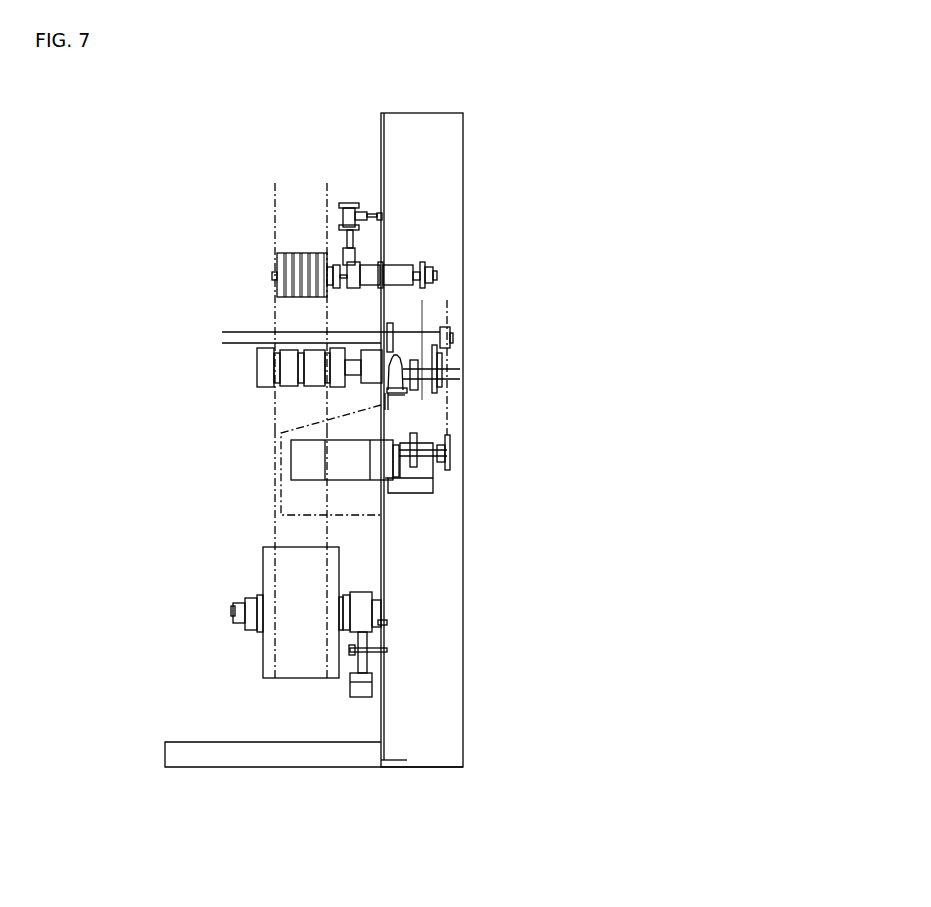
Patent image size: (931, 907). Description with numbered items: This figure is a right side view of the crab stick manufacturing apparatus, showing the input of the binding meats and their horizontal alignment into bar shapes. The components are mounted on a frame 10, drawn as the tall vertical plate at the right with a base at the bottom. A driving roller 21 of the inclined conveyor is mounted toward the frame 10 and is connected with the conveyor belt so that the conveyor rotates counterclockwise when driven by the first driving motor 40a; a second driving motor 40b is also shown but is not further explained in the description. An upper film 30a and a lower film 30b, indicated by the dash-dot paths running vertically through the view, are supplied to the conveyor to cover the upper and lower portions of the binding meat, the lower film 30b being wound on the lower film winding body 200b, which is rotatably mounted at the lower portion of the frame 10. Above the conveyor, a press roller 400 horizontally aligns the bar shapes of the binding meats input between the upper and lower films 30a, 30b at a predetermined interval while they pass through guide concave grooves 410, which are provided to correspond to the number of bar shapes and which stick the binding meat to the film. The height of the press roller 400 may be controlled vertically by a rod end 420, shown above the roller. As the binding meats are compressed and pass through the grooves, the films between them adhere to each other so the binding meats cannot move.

The frame 10 is at (353, 440).
The driving roller 21 is at (257, 380).
The upper film 30a is at (275, 200).
The lower film 30b is at (274, 522).
The first driving motor 40a is at (437, 465).
The second driving motor 40b is at (290, 459).
The lower film winding body 200b is at (263, 570).
The press roller 400 is at (278, 263).
The guide concave grooves 410 is at (313, 297).
The rod end 420 is at (350, 203).